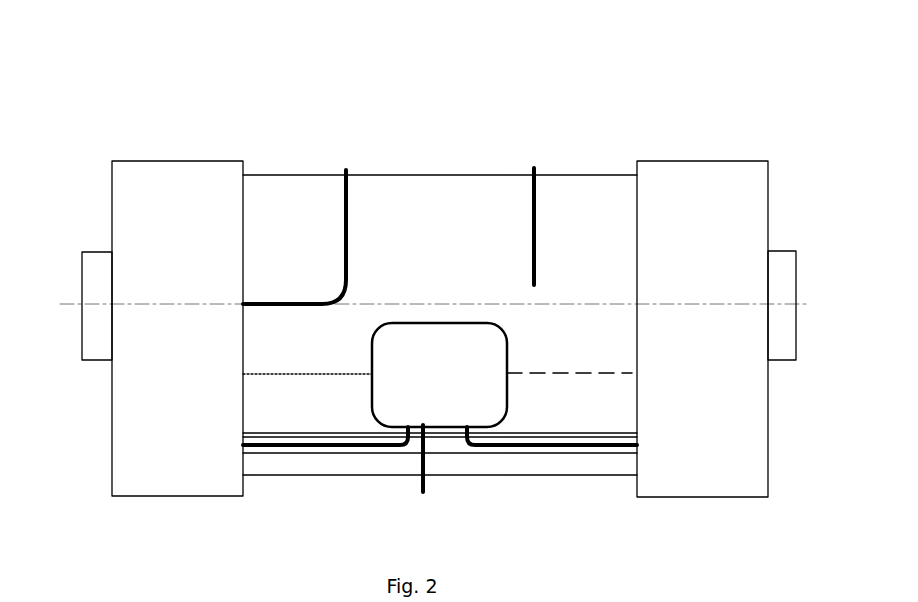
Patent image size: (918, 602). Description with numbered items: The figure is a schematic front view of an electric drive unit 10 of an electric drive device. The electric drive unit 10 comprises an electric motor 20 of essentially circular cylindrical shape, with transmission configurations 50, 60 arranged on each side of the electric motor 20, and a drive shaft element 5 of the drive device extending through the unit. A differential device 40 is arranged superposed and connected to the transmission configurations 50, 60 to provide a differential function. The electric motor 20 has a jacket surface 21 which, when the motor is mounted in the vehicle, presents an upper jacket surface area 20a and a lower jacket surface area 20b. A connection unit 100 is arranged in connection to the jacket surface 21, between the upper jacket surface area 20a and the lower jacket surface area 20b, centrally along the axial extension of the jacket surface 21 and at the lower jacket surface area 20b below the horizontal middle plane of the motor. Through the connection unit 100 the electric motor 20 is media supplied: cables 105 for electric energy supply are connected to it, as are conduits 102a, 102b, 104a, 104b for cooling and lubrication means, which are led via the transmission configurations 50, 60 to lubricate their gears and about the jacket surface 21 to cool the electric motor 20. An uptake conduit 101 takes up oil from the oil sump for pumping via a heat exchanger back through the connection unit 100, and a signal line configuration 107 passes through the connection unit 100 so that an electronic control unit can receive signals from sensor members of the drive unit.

The electric drive unit 10 is at (676, 103).
The drive shaft element 5 is at (103, 360).
The electric motor 20 is at (489, 168).
The upper jacket surface area 20a is at (305, 175).
The lower jacket surface area 20b is at (567, 437).
The jacket surface 21 is at (412, 200).
The differential device 40 is at (350, 481).
The transmission configuration 50 is at (177, 496).
The transmission configuration 60 is at (702, 497).
The connection unit 100 is at (450, 434).
The uptake conduit 101 is at (422, 480).
The conduit 102a is at (270, 446).
The conduit 102b is at (346, 229).
The conduit 104a is at (527, 450).
The conduit 104b is at (534, 223).
The cables 105 is at (547, 373).
The signal line configuration 107 is at (260, 374).